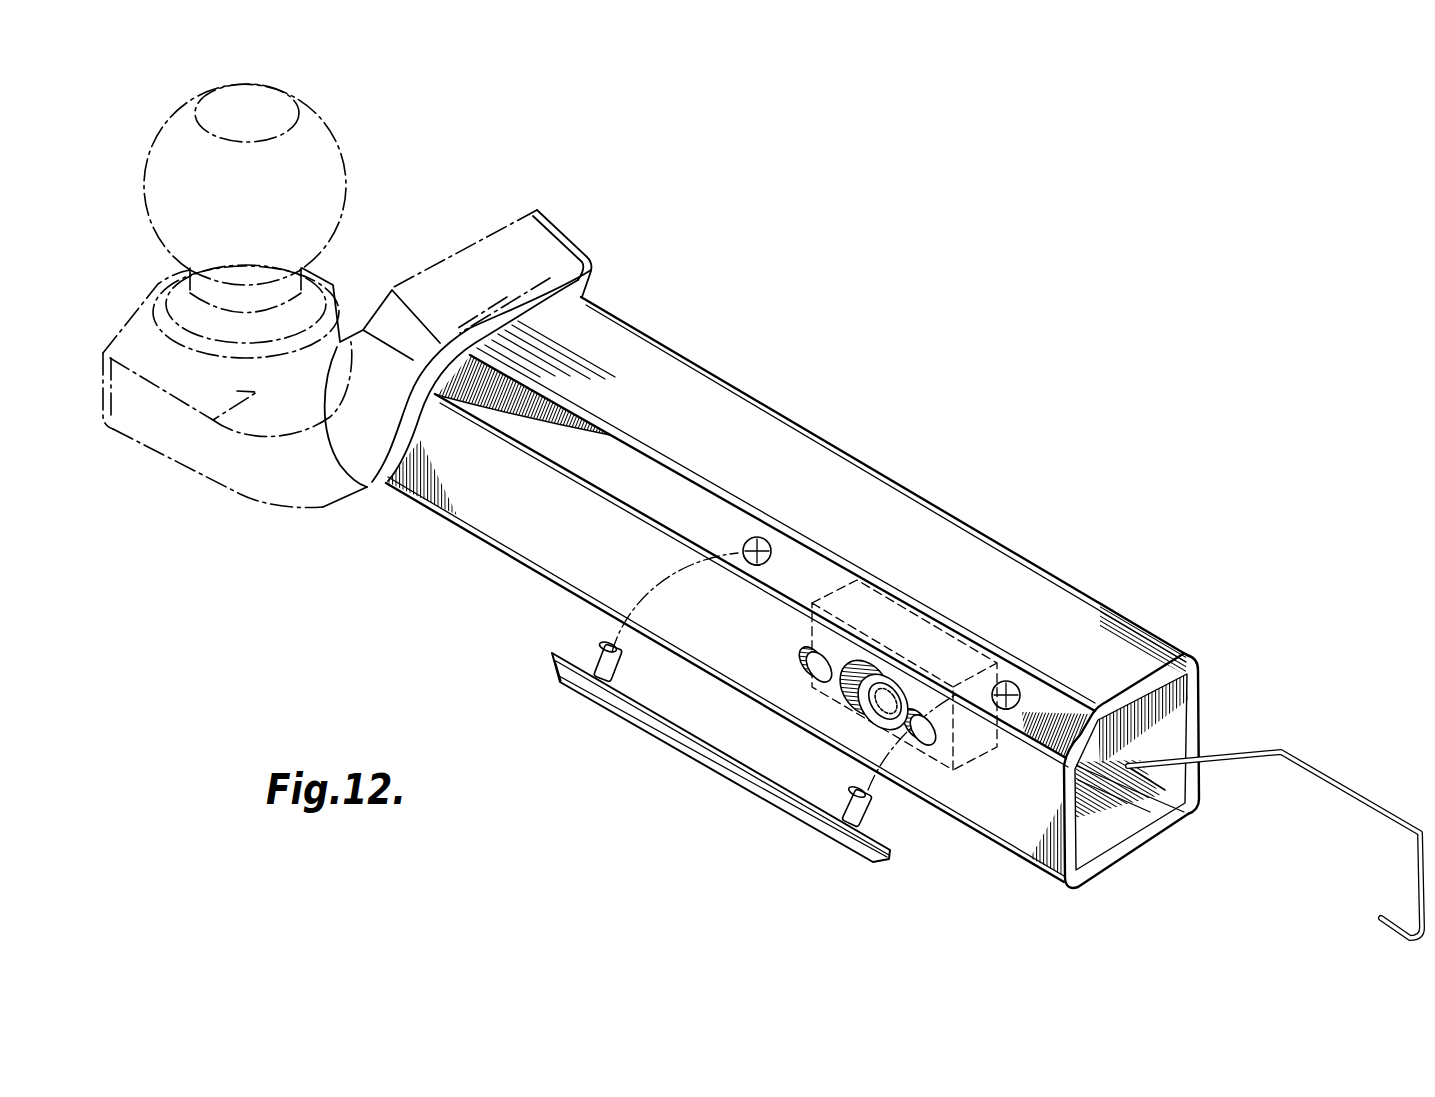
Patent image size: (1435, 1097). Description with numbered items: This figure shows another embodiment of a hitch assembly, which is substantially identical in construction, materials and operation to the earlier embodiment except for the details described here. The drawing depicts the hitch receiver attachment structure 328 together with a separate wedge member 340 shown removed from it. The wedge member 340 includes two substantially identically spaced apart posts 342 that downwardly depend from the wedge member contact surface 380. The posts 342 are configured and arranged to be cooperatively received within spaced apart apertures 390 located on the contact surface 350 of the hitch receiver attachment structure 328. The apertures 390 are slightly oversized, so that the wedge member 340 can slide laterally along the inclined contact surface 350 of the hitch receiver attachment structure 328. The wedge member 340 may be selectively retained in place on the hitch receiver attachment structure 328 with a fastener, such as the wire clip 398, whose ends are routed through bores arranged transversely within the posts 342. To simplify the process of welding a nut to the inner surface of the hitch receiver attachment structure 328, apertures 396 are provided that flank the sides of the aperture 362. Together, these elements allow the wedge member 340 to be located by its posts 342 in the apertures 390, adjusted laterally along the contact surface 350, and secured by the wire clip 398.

The hitch receiver attachment structure 328 is at (792, 606).
The wedge member 340 is at (721, 757).
The posts 342 is at (600, 655).
The contact surface 350 is at (1052, 718).
The aperture 362 is at (852, 700).
The wedge member contact surface 380 is at (648, 708).
The apertures 390 is at (757, 535).
The apertures 396 is at (808, 668).
The wire clip 398 is at (1323, 773).